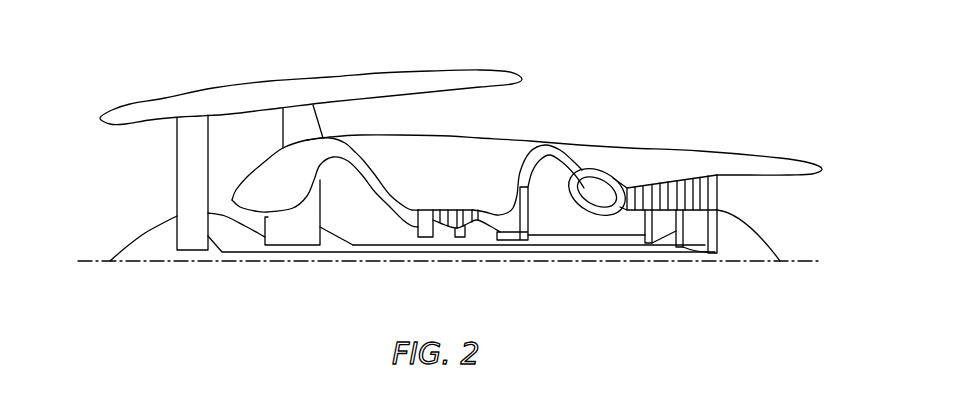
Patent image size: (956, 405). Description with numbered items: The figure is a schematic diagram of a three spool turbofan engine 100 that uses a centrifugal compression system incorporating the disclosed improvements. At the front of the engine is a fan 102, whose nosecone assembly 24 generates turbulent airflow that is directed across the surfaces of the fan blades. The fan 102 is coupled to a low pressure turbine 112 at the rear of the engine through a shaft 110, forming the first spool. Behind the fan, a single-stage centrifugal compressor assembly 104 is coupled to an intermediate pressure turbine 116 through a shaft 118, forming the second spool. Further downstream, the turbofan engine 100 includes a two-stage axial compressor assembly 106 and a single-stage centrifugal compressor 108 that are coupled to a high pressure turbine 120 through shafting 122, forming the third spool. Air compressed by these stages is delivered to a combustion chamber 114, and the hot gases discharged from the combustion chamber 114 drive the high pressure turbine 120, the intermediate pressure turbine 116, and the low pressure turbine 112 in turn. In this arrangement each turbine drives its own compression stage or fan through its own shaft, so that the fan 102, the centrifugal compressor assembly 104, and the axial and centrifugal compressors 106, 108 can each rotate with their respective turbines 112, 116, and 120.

The three spool turbofan engine 100 is at (728, 62).
The fan 102 is at (190, 176).
The nosecone assembly 24 is at (132, 238).
The two-stage axial compressor assembly 106 is at (450, 172).
The combustion chamber 114 is at (591, 178).
The shaft 110 is at (240, 254).
The single-stage centrifugal compressor assembly 104 is at (300, 246).
The shaft 118 is at (372, 247).
The single-stage centrifugal compressor 108 is at (517, 236).
The shafting 122 is at (575, 237).
The high pressure turbine 120 is at (648, 244).
The intermediate pressure turbine 116 is at (680, 248).
The low pressure turbine 112 is at (712, 254).